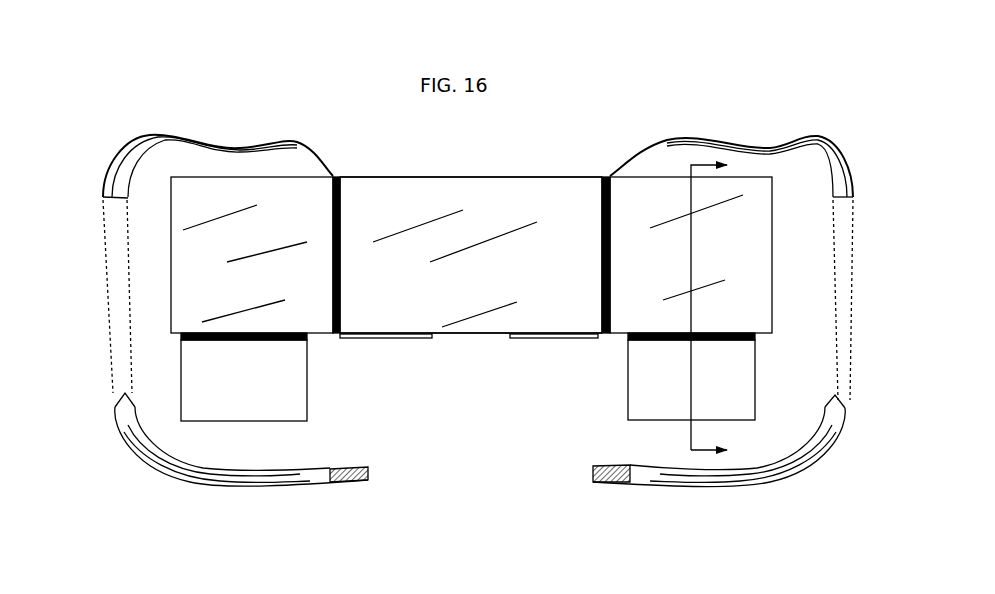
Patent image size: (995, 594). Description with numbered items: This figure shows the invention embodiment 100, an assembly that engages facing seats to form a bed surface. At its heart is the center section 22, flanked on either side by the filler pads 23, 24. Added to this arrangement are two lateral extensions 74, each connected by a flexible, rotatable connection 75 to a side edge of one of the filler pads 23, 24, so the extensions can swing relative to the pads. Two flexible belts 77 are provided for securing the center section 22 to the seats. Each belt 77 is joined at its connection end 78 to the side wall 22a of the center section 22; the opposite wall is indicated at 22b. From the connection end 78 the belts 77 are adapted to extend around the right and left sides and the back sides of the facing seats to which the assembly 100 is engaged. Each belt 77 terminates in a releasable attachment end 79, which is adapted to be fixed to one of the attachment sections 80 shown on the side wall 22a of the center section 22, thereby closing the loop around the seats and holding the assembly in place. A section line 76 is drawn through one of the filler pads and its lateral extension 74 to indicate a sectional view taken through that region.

The invention embodiment 100 is at (446, 305).
The center section 22 is at (452, 198).
The side wall 22a is at (465, 336).
The upper edge of display panel 22b is at (553, 175).
The filler pad 23 is at (218, 217).
The filler pad 24 is at (622, 200).
The lateral extension 74 is at (192, 397).
The flexible, rotatable connection 75 is at (207, 333).
The section line 76 is at (722, 309).
The flexible belt 77 is at (232, 137).
The connection end 78 is at (340, 174).
The releasable attachment end 79 is at (350, 478).
The attachment section 80 is at (383, 339).